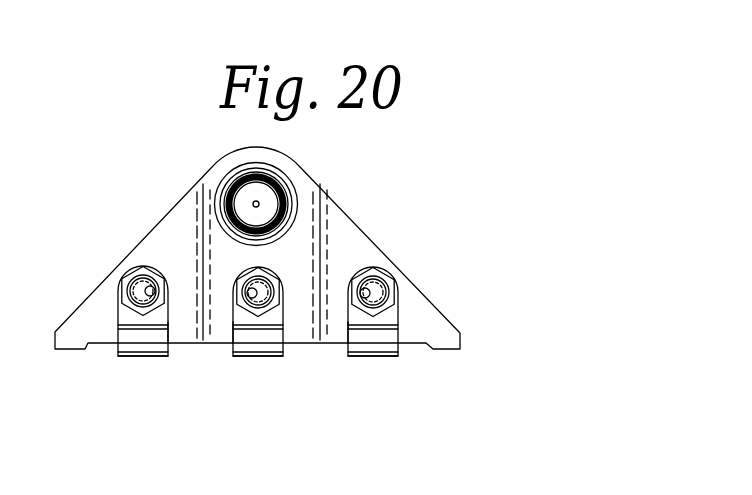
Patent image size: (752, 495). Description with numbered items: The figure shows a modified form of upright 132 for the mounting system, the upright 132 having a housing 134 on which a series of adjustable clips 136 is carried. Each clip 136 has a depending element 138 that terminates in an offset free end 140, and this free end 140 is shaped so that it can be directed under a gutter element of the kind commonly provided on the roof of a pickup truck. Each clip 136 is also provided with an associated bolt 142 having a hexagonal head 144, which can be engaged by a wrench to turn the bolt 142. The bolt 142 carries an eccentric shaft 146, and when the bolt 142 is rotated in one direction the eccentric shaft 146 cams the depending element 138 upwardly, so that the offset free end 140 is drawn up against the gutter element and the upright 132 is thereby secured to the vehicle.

The upright 132 is at (303, 235).
The housing 134 is at (190, 207).
The adjustable clip 136 is at (231, 321).
The depending element 138 is at (114, 344).
The offset free end 140 is at (158, 355).
The bolt 142 is at (130, 268).
The hexagonal head 144 is at (120, 297).
The eccentric shaft 146 is at (167, 277).